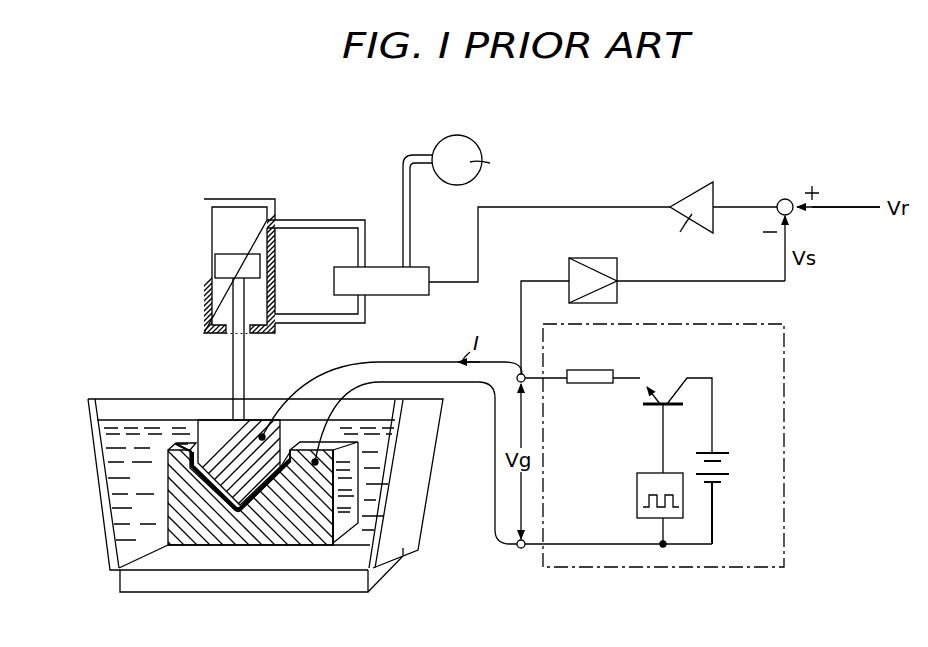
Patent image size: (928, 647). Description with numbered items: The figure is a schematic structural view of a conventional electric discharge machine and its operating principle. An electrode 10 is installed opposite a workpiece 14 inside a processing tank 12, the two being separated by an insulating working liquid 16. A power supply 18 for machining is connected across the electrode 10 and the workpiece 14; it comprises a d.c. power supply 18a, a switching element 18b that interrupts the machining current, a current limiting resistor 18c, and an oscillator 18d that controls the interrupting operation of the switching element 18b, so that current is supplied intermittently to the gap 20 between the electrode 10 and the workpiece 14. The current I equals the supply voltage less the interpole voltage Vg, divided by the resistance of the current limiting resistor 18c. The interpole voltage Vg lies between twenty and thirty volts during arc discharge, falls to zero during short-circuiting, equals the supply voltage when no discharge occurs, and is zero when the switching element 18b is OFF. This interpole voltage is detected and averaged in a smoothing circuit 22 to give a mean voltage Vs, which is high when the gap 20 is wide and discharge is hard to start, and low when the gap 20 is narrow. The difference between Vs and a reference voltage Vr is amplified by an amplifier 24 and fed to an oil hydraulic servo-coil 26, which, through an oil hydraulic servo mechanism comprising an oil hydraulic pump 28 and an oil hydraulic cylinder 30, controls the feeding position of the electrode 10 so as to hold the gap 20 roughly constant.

The electrode 10 is at (213, 430).
The processing tank 12 is at (102, 498).
The workpiece 14 is at (288, 537).
The insulating working liquid 16 is at (130, 437).
The power supply 18 is at (784, 520).
The d.c. power supply 18a is at (718, 450).
The switching element 18b is at (665, 395).
The current limiting resistor 18c is at (590, 388).
The oscillator 18d is at (637, 497).
The gap 20 is at (238, 480).
The smoothing circuit 22 is at (602, 258).
The amplifier 24 is at (692, 192).
The oil hydraulic servo-coil 26 is at (382, 290).
The oil hydraulic pump 28 is at (459, 135).
The oil hydraulic cylinder 30 is at (236, 199).